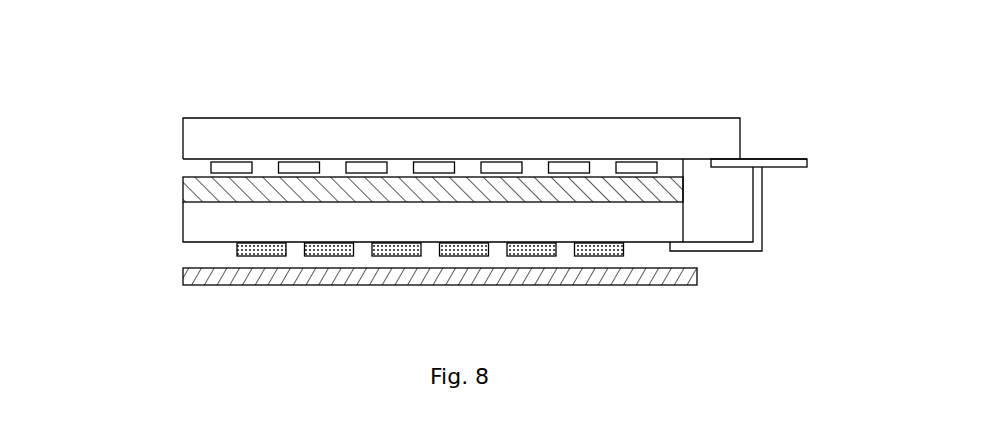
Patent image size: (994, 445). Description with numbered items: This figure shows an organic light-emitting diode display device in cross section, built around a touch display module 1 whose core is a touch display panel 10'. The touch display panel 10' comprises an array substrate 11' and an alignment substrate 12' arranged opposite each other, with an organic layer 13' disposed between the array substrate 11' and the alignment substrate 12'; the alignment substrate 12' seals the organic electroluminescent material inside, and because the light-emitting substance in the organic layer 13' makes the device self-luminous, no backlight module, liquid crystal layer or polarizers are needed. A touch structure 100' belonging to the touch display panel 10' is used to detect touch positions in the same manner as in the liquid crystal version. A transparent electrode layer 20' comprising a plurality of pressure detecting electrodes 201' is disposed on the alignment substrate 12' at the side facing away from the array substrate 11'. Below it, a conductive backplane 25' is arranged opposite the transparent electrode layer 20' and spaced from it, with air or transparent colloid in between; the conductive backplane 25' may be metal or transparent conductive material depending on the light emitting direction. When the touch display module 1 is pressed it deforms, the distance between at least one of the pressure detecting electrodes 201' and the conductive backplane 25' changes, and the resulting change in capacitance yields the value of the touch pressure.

The touch display module 1 is at (177, 104).
The touch display panel 10' is at (446, 167).
The array substrate 11' is at (475, 138).
The organic layer 13' is at (413, 189).
The alignment substrate 12' is at (413, 200).
The touch structure 100' is at (434, 128).
The pressure detecting electrodes 201' is at (375, 261).
The transparent electrode layer 20' is at (468, 282).
The conductive backplane 25' is at (468, 280).